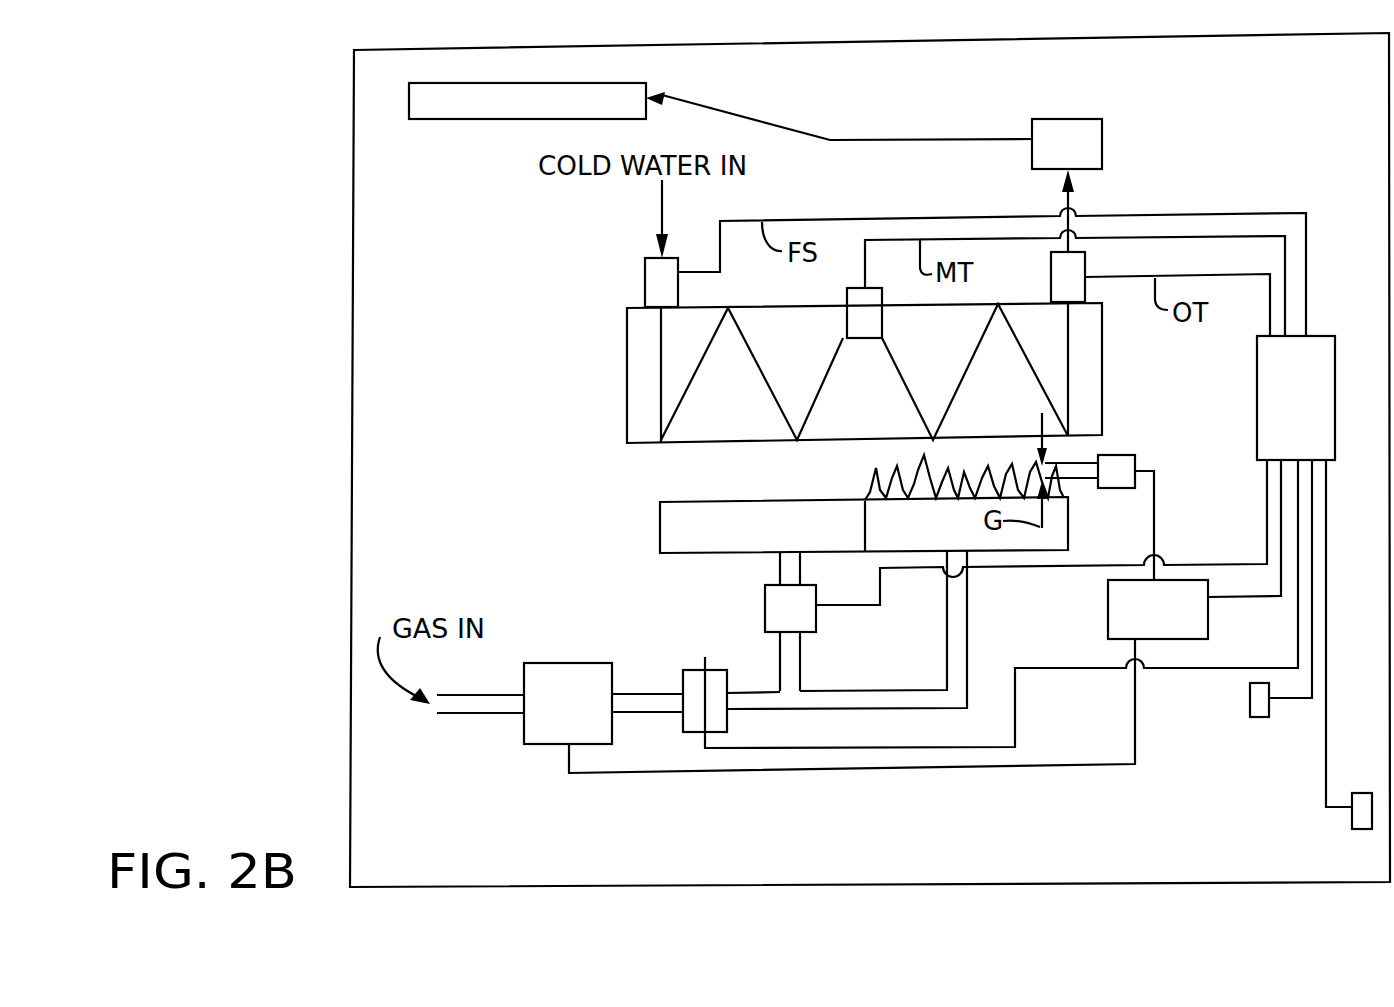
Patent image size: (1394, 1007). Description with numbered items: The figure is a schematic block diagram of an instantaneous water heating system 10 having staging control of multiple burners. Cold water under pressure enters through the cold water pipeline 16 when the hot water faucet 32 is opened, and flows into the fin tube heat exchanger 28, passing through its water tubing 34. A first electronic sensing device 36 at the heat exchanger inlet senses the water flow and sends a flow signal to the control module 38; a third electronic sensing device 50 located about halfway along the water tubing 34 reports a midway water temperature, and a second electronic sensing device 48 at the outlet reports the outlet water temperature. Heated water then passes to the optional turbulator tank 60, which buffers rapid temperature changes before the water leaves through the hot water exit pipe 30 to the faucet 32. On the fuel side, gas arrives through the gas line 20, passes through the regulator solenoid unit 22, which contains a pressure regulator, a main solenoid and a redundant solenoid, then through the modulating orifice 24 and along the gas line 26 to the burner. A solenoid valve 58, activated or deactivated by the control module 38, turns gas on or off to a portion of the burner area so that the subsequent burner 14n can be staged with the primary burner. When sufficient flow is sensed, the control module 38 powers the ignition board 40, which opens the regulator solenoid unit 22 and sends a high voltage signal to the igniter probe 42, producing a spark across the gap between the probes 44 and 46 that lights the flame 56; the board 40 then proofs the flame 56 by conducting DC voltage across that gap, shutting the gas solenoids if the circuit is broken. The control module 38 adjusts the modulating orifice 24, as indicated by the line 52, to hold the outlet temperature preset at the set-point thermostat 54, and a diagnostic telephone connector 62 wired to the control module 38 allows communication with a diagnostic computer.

The water heating system 10 is at (344, 520).
The subsequent burner 14n is at (660, 527).
The cold water pipeline 16 is at (660, 250).
The gas line 20 is at (465, 714).
The regulator solenoid unit 22 is at (545, 746).
The modulating orifice 24 is at (695, 668).
The gas line 26 is at (845, 690).
The heat exchanger 28 is at (627, 343).
The hot water exit pipe 30 is at (707, 109).
The hot water faucet 32 is at (487, 119).
The water tubing 34 is at (660, 388).
The first electronic sensing device 36 is at (645, 275).
The control module 38 is at (1257, 361).
The ignition board 40 is at (1108, 618).
The igniter probe 42 is at (1130, 455).
The igniter probe 44 is at (1078, 462).
The igniter probe 46 is at (1083, 480).
The second electronic sensing device 48 is at (1051, 266).
The third electronic sensing device 50 is at (847, 290).
The line 52 is at (1216, 670).
The set-point thermostat 54 is at (1352, 822).
The flame 56 is at (870, 479).
The solenoid valve 58 is at (763, 596).
The turbulator tank 60 is at (1103, 147).
The diagnostic telephone connector 62 is at (1258, 718).